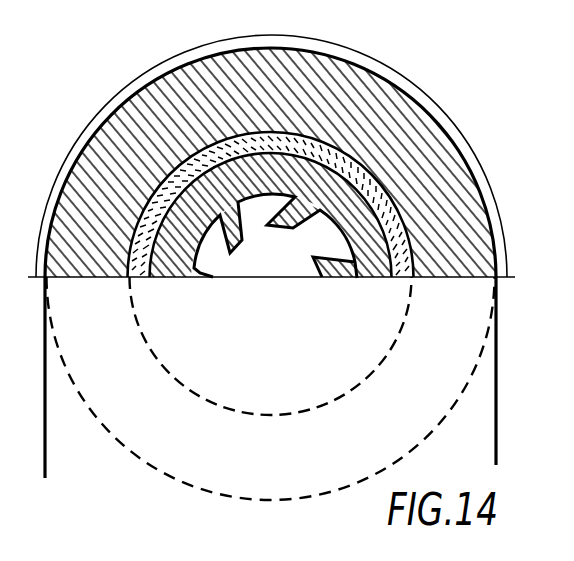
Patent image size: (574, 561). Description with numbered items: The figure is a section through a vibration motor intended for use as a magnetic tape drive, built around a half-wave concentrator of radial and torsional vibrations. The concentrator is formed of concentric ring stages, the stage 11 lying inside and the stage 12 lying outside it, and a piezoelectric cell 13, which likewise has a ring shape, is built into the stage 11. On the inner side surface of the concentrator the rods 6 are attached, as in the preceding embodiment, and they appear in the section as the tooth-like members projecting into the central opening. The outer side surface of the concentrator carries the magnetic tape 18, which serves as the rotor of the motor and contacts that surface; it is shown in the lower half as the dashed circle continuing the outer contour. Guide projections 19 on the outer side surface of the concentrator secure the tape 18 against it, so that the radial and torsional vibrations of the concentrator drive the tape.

The rods 6 is at (293, 232).
The stage of the concentrator 11 is at (367, 264).
The stage of the concentrator 12 is at (463, 262).
The piezoelectric cell 13 is at (407, 258).
The magnetic tape 18 is at (495, 392).
The guide projections 19 is at (490, 204).